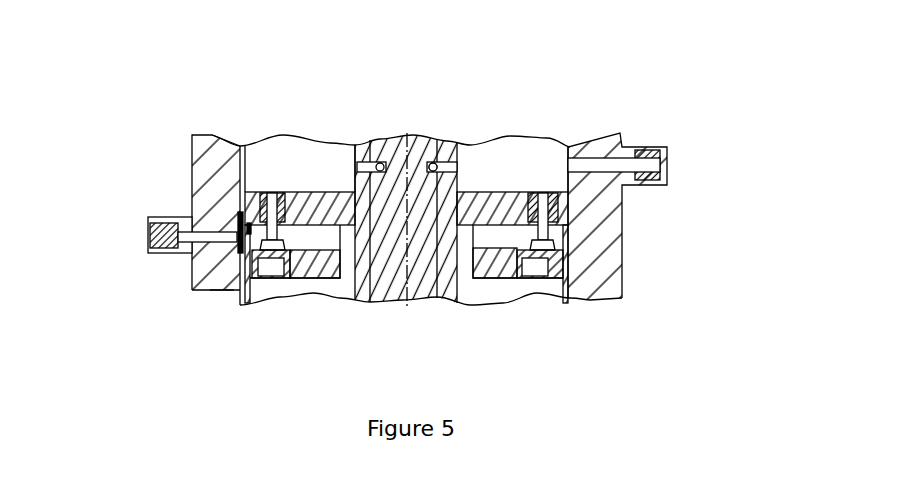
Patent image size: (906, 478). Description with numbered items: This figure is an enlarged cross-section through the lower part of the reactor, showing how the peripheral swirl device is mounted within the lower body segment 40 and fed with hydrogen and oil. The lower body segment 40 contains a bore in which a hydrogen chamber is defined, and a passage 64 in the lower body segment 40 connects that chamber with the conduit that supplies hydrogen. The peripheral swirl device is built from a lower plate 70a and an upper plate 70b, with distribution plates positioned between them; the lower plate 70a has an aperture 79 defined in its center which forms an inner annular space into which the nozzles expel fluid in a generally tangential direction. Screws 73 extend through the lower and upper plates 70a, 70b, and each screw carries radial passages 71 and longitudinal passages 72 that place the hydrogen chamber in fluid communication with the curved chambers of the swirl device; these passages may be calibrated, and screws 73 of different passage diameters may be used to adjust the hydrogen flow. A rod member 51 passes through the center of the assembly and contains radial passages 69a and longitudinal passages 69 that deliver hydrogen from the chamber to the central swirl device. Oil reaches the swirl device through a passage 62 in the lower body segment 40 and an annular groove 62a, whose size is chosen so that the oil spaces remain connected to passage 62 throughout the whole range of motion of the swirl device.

The lower body segment 40 is at (207, 195).
The passage 62 is at (205, 233).
The annular groove 62a is at (220, 292).
The longitudinal passages 72 is at (314, 200).
The screws 73 is at (227, 210).
The aperture 79 is at (350, 276).
The rod member 51 is at (426, 268).
The upper plate 70b is at (342, 147).
The radial passages 69a is at (438, 169).
The longitudinal passages 69 is at (443, 222).
The lower plate 70a is at (517, 266).
The passage 64 is at (617, 165).
The radial passages 71 is at (620, 133).